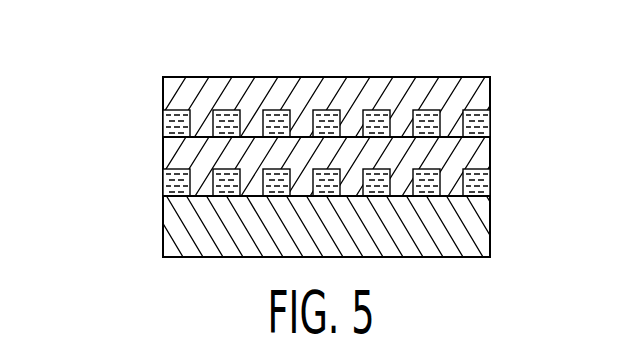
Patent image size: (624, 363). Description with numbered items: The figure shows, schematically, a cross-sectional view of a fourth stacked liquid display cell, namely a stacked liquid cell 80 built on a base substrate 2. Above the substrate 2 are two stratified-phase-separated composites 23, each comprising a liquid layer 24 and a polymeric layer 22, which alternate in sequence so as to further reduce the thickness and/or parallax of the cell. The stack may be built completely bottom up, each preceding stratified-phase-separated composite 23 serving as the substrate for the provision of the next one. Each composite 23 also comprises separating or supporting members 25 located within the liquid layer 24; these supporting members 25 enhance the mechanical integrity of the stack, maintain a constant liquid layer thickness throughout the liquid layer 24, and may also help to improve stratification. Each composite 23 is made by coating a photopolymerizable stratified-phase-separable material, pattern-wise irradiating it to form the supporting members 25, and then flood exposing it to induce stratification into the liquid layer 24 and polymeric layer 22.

The stacked liquid cell 80 is at (88, 109).
The substrate 2 is at (465, 228).
The polymeric layer 22 is at (481, 97).
The stratified-phase-separated composite 23 is at (359, 139).
The liquid layer 24 is at (332, 155).
The supporting members 25 is at (190, 124).